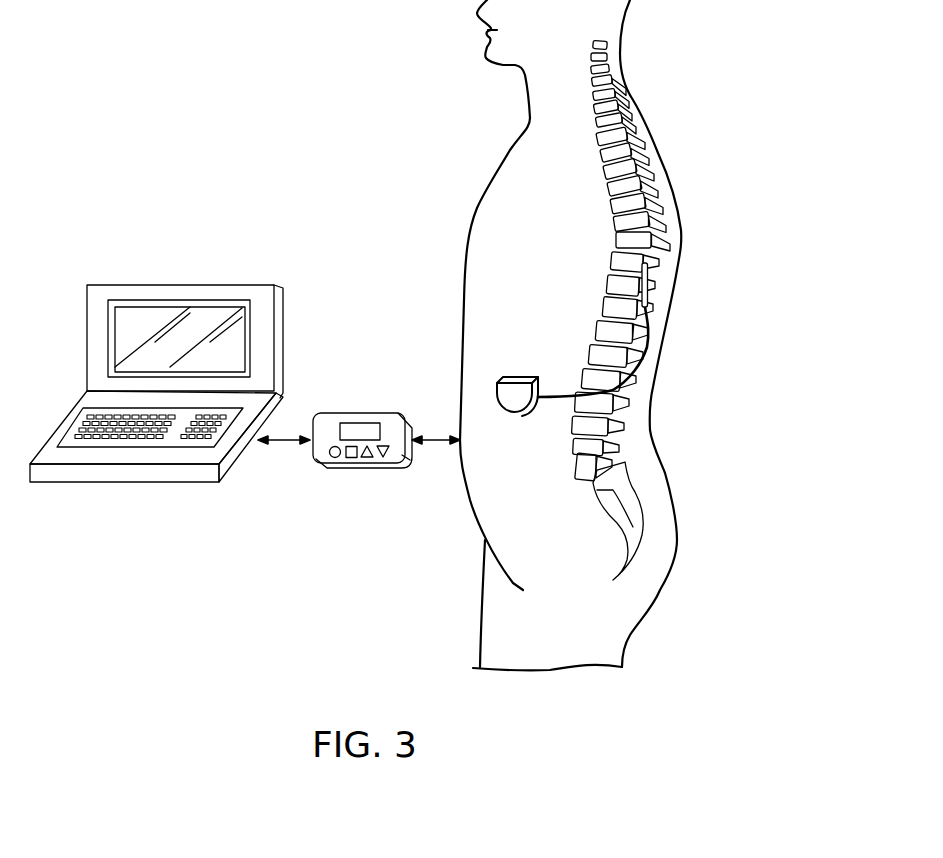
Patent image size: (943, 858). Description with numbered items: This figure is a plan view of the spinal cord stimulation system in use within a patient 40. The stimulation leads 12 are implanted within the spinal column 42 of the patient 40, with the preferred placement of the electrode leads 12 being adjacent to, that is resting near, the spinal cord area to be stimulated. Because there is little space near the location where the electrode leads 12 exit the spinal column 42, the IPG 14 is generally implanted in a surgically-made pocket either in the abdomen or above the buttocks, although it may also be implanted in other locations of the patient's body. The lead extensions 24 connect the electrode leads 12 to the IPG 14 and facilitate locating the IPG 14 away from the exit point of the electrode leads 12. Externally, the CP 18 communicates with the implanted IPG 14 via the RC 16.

The CP 18 is at (168, 283).
The RC 16 is at (382, 394).
The patient 40 is at (473, 213).
The spinal column 42 is at (612, 265).
The stimulation leads 12 is at (652, 287).
The lead extensions 24 is at (645, 355).
The IPG 14 is at (520, 403).